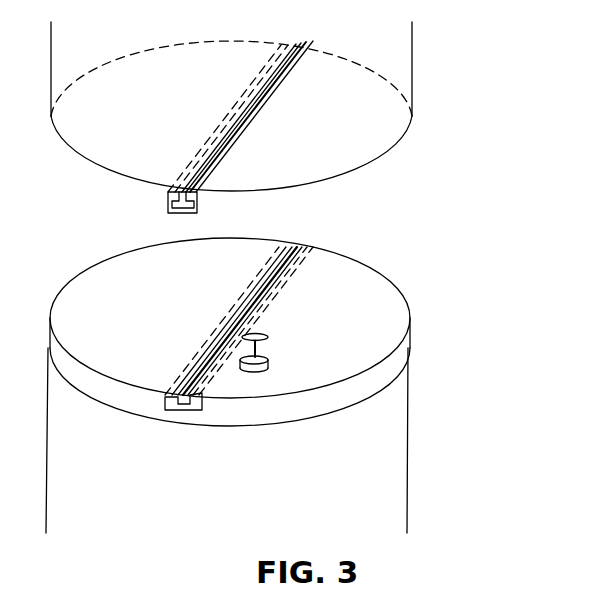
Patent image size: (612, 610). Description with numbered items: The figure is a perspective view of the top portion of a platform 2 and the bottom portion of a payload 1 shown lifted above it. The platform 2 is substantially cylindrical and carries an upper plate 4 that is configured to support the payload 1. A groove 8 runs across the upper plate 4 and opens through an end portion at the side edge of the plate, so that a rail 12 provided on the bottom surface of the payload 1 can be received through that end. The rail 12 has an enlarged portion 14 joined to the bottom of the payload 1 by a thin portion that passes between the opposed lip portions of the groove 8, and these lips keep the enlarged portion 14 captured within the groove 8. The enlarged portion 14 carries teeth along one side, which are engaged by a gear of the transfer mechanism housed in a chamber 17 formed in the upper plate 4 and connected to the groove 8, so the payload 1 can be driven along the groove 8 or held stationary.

The payload 1 is at (413, 83).
The platform 2 is at (407, 492).
The upper plate 4 is at (404, 298).
The groove 8 is at (303, 243).
The rail 12 is at (168, 196).
The enlarged portion 14 is at (170, 212).
The chamber 17 is at (268, 338).